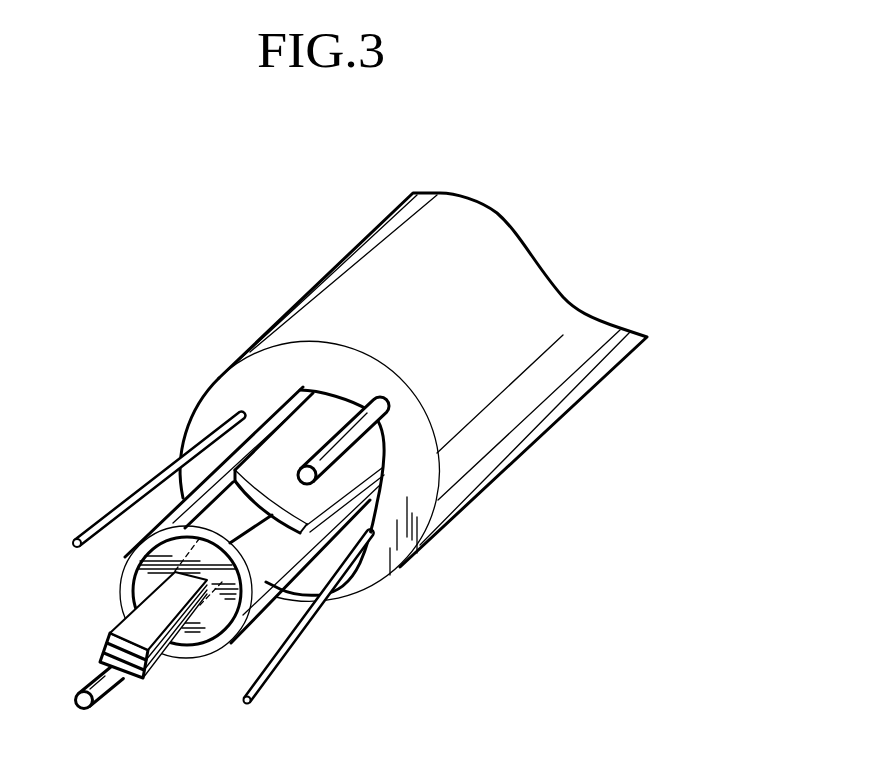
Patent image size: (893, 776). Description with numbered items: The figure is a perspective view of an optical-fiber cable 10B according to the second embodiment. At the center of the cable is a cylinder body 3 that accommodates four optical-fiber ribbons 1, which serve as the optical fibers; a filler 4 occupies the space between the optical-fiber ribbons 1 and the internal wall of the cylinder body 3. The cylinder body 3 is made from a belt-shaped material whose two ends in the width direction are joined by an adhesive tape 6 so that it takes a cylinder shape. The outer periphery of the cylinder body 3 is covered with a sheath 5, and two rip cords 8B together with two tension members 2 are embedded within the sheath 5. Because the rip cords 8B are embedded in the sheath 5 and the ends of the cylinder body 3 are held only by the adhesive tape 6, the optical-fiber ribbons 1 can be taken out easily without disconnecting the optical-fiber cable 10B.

The optical-fiber cable 10B is at (307, 212).
The optical-fiber ribbon 1 is at (148, 663).
The tension member 2 is at (367, 410).
The cylinder body 3 is at (130, 566).
The filler 4 is at (210, 622).
The sheath 5 is at (366, 572).
The adhesive tape 6 is at (357, 457).
The rip cord 8B is at (128, 502).